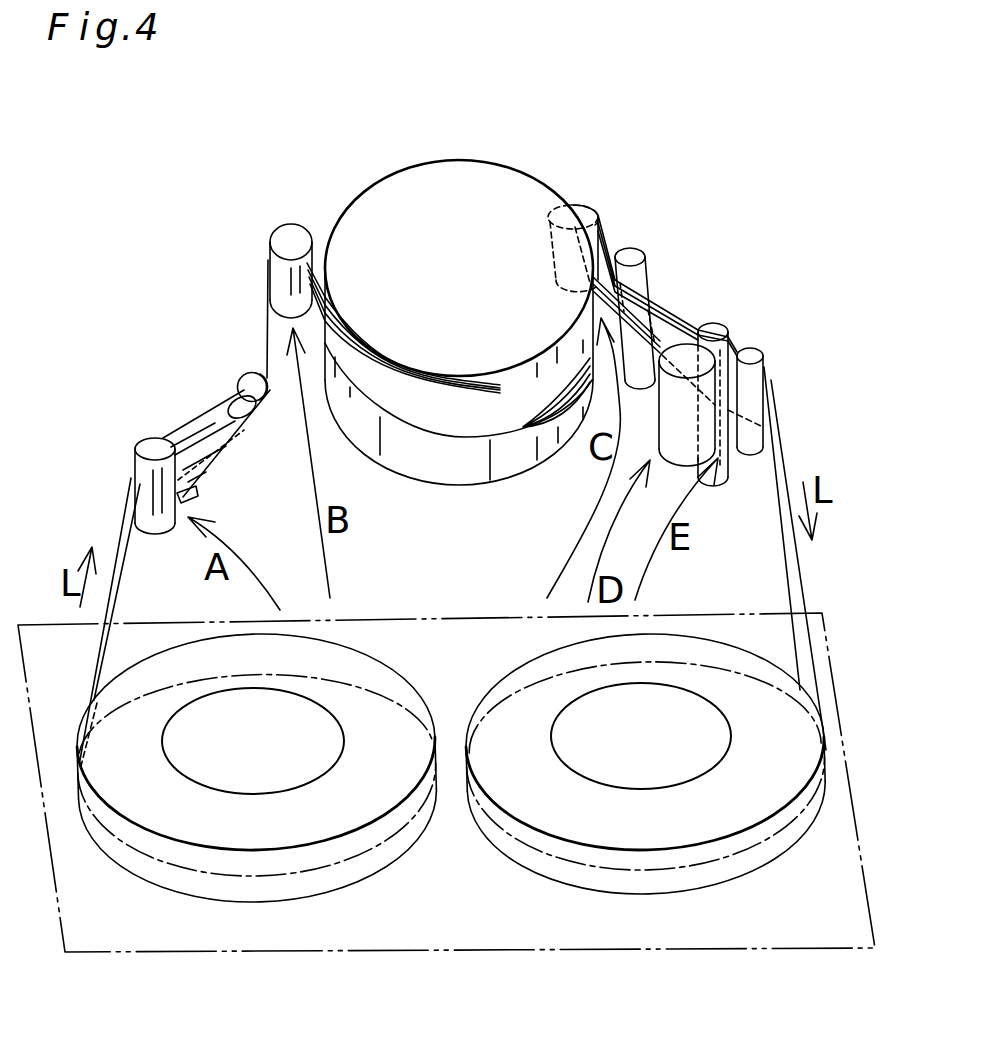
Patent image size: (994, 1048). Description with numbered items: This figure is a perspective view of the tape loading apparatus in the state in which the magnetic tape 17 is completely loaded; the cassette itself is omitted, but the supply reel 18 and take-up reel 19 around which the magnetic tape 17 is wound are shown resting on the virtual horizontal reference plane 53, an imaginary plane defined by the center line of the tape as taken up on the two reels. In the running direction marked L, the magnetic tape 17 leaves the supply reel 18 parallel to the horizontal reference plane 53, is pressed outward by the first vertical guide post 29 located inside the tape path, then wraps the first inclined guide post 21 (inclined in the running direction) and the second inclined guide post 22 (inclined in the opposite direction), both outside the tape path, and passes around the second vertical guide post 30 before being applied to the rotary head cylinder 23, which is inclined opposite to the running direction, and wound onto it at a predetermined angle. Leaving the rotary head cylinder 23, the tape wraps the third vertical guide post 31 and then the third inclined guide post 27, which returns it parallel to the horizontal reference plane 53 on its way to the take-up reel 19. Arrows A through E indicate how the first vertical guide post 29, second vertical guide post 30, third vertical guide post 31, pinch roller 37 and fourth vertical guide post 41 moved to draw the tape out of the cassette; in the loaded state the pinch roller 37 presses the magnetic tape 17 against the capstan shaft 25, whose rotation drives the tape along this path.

The magnetic tape 17 is at (133, 512).
The supply reel 18 is at (243, 903).
The take-up reel 19 is at (565, 880).
The first inclined guide post 21 is at (222, 413).
The second inclined guide post 22 is at (250, 373).
The rotary head cylinder 23 is at (515, 165).
The capstan shaft 25 is at (723, 322).
The third inclined guide post 27 is at (647, 267).
The first vertical guide post 29 is at (145, 437).
The second vertical guide post 30 is at (292, 224).
The third vertical guide post 31 is at (578, 202).
The pinch roller 37 is at (680, 343).
The fourth vertical guide post 41 is at (762, 349).
The virtual horizontal reference plane 53 is at (98, 952).